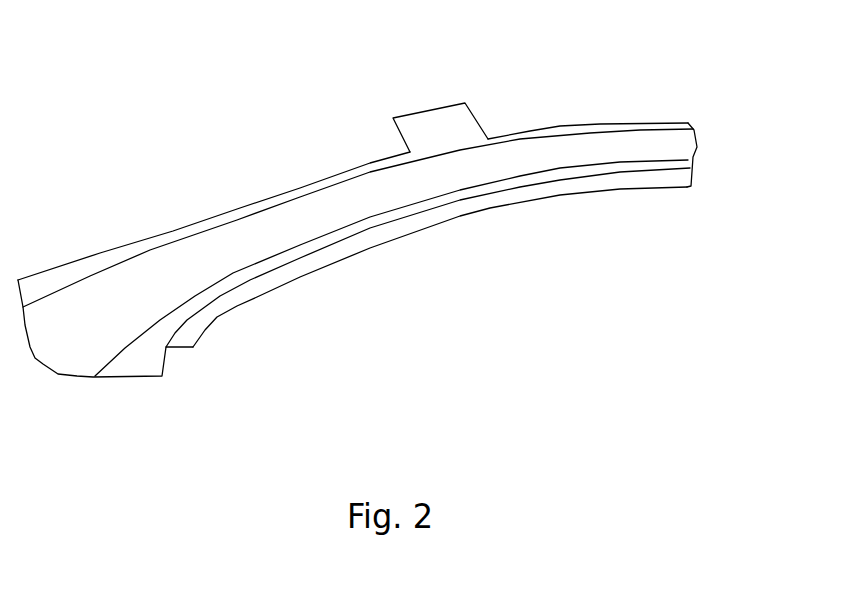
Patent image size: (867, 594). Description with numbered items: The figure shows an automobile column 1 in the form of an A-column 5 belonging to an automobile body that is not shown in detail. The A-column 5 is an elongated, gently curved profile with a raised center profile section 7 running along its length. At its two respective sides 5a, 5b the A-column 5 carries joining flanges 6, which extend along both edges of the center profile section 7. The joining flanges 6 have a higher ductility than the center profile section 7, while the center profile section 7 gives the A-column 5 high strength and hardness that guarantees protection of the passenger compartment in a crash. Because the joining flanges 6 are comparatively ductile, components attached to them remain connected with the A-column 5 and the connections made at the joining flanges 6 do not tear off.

The automobile column 1 is at (178, 102).
The A-column 5 is at (200, 262).
The side of the A-column 5a is at (244, 294).
The side of the A-column 5b is at (243, 207).
The joining flange 6 is at (330, 185).
The center profile section 7 is at (388, 188).